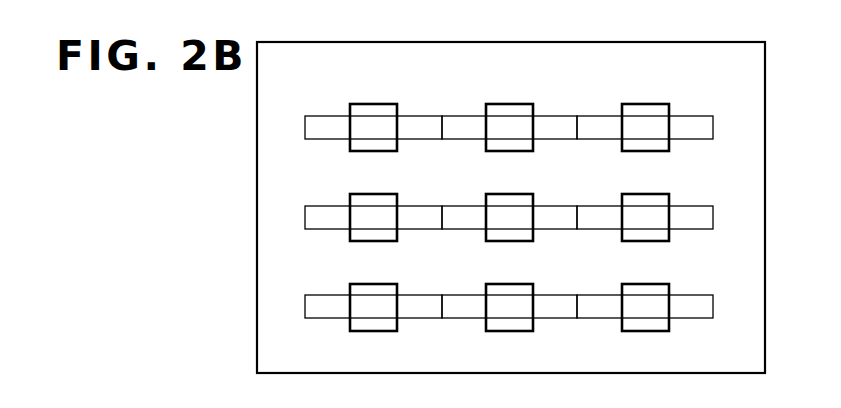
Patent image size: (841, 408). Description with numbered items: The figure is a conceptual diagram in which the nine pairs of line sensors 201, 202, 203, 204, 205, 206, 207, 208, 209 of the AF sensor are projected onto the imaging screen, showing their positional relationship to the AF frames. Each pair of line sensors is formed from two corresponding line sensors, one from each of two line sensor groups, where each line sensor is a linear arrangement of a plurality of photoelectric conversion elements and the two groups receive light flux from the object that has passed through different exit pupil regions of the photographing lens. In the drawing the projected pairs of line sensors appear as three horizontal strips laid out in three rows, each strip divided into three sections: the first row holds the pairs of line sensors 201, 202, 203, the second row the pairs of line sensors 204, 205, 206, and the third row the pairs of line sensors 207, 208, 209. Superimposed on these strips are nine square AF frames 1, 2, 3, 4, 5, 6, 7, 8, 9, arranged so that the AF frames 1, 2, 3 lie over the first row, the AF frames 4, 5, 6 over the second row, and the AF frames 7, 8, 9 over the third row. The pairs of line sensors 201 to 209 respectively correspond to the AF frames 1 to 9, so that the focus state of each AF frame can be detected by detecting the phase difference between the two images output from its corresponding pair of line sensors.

The AF frame 1 is at (374, 104).
The AF frame 2 is at (510, 104).
The AF frame 3 is at (646, 104).
The AF frame 4 is at (374, 194).
The AF frame 5 is at (510, 194).
The AF frame 6 is at (646, 194).
The AF frame 7 is at (374, 284).
The AF frame 8 is at (510, 284).
The AF frame 9 is at (646, 284).
The pair of line sensors 201 is at (321, 139).
The pair of line sensors 202 is at (458, 139).
The pair of line sensors 203 is at (593, 139).
The pair of line sensors 204 is at (321, 229).
The pair of line sensors 205 is at (458, 229).
The pair of line sensors 206 is at (593, 229).
The pair of line sensors 207 is at (321, 318).
The pair of line sensors 208 is at (458, 318).
The pair of line sensors 209 is at (593, 318).